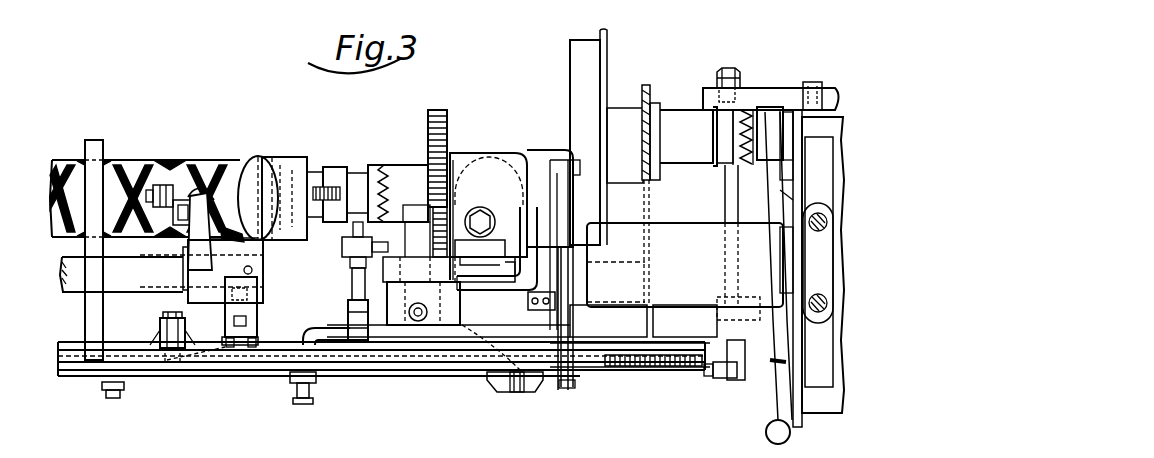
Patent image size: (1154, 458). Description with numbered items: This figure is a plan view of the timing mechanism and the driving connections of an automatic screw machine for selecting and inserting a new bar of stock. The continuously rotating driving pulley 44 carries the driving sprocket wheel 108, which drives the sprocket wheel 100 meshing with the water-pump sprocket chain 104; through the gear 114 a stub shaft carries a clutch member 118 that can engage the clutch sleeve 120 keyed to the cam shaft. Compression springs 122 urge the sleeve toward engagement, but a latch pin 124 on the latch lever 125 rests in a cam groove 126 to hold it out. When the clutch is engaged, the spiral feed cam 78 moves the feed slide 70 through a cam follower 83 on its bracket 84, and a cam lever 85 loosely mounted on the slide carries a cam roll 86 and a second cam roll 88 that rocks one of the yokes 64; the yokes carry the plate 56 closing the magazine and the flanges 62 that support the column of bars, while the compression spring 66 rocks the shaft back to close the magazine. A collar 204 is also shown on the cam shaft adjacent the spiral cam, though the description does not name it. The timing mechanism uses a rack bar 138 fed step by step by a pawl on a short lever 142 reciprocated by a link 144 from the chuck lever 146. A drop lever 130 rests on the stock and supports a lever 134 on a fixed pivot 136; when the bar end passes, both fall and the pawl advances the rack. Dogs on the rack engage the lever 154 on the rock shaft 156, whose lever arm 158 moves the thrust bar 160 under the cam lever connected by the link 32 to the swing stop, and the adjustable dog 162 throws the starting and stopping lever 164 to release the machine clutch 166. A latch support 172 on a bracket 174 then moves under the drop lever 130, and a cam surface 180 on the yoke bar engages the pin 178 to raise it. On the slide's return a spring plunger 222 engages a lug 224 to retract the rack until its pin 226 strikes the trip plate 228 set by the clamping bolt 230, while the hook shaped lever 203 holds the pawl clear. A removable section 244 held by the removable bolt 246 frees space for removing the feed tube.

The hook shaped lever 203 is at (102, 130).
The spiral feed cam 78 is at (117, 163).
The second cam roll 88 is at (167, 187).
The cam roll 86 is at (181, 200).
The cam lever 85 is at (195, 190).
The cam follower 83 is at (244, 240).
The collar 204 is at (293, 156).
The compression springs 122 is at (330, 190).
The cam groove 126 is at (363, 167).
The clutch member 118 is at (403, 173).
The clutch sleeve 120 is at (378, 166).
The yokes 64 is at (410, 217).
The gear 114 is at (447, 101).
The flanges 62 is at (440, 200).
The compression spring 66 is at (470, 210).
The link 32 is at (563, 153).
The cam surface 180 is at (558, 313).
The pin 178 is at (557, 313).
The driving pulley 44 is at (580, 50).
The sprocket chain 104 is at (642, 87).
The driving sprocket wheel 108 is at (652, 103).
The rock shaft 156 is at (732, 195).
The machine clutch 166 is at (770, 110).
The thrust bar 160 is at (750, 92).
The lever arm 158 is at (720, 80).
The sprocket wheel 100 is at (643, 281).
The chuck lever 146 is at (717, 300).
The link 144 is at (683, 334).
The lever 154 is at (731, 378).
The starting and stopping lever 164 is at (777, 409).
The adjustable dog 162 is at (720, 377).
The rack bar 138 is at (625, 366).
The lever 134 is at (362, 366).
The feed slide 70 is at (78, 287).
The bracket 84 is at (255, 295).
The spring plunger 222 is at (247, 315).
The pin 226 is at (240, 338).
The lug 224 is at (230, 346).
The trip plate 228 is at (251, 346).
The lever 142 is at (158, 328).
The clamping bolt 230 is at (115, 400).
The fixed pivot 136 is at (298, 404).
The latch pin 124 is at (347, 233).
The latch lever 125 is at (357, 268).
The plate 56 is at (420, 282).
The removable bolt 246 is at (418, 321).
The removable section 244 is at (453, 325).
The latch support 172 is at (502, 391).
The bracket 174 is at (517, 392).
The drop lever 130 is at (568, 388).